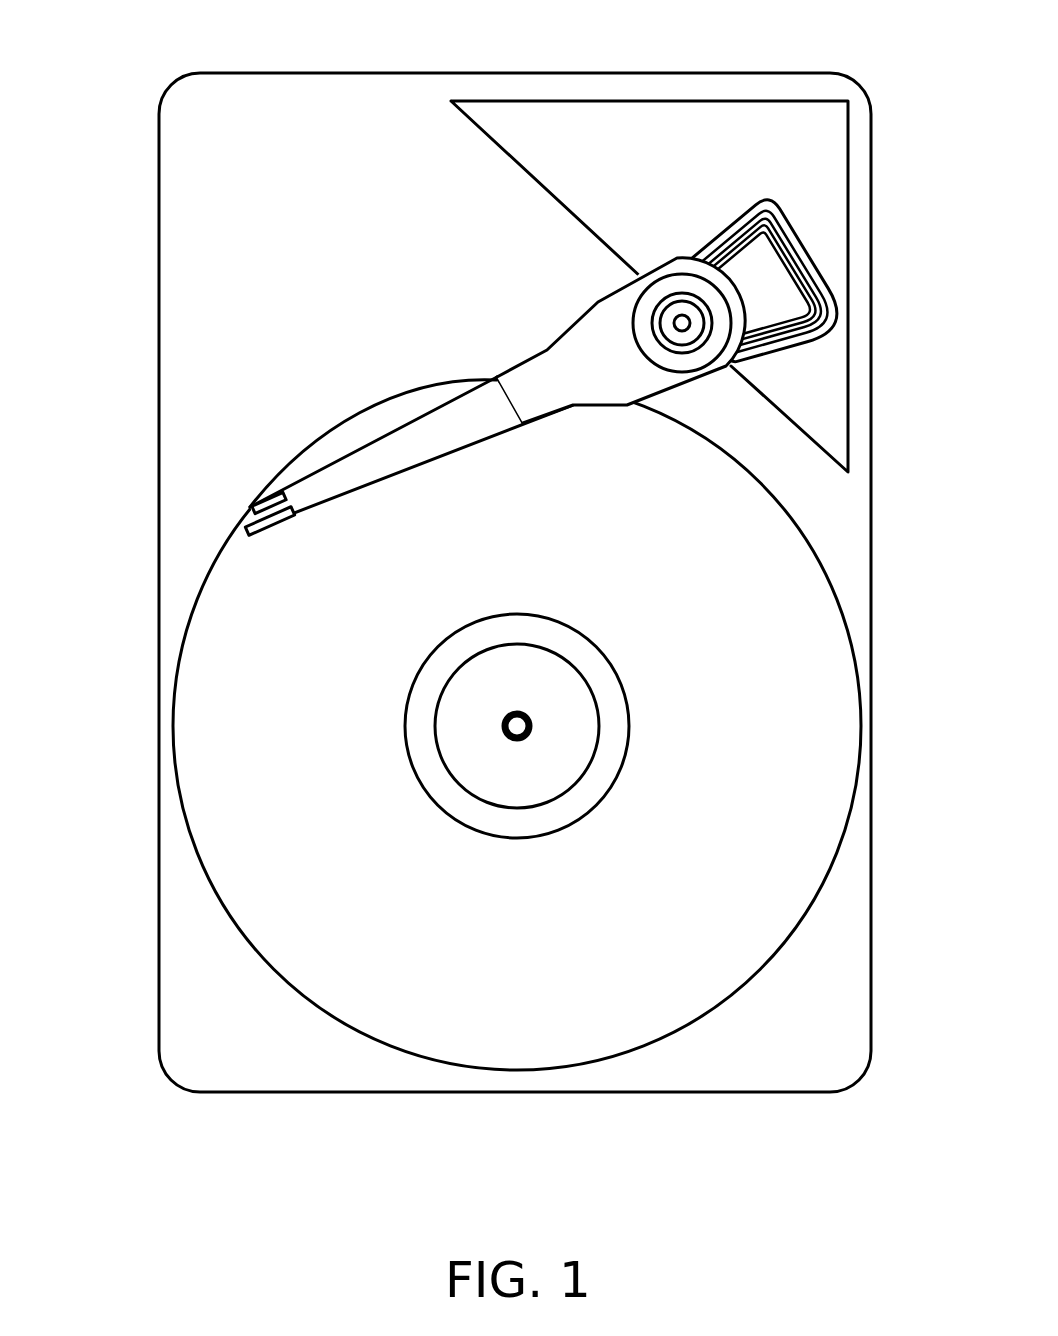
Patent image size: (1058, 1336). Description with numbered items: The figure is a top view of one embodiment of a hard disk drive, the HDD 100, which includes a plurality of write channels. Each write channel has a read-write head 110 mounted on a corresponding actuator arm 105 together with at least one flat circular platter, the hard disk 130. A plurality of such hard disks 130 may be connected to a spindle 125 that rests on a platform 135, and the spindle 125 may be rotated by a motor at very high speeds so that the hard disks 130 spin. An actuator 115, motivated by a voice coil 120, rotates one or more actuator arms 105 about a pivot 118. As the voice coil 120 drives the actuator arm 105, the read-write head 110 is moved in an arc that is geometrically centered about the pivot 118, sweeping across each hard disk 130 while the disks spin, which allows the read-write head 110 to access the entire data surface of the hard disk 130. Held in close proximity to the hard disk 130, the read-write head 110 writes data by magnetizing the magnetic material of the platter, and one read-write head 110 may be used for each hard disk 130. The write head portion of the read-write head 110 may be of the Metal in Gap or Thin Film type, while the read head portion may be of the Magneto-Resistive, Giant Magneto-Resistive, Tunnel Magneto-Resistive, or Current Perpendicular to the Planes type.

The HDD 100 is at (108, 52).
The actuator arm 105 is at (453, 420).
The read-write head 110 is at (250, 505).
The actuator 115 is at (582, 314).
The pivot 118 is at (682, 324).
The voice coil 120 is at (738, 237).
The spindle 125 is at (563, 672).
The hard disk 130 is at (771, 958).
The platform 135 is at (704, 1093).